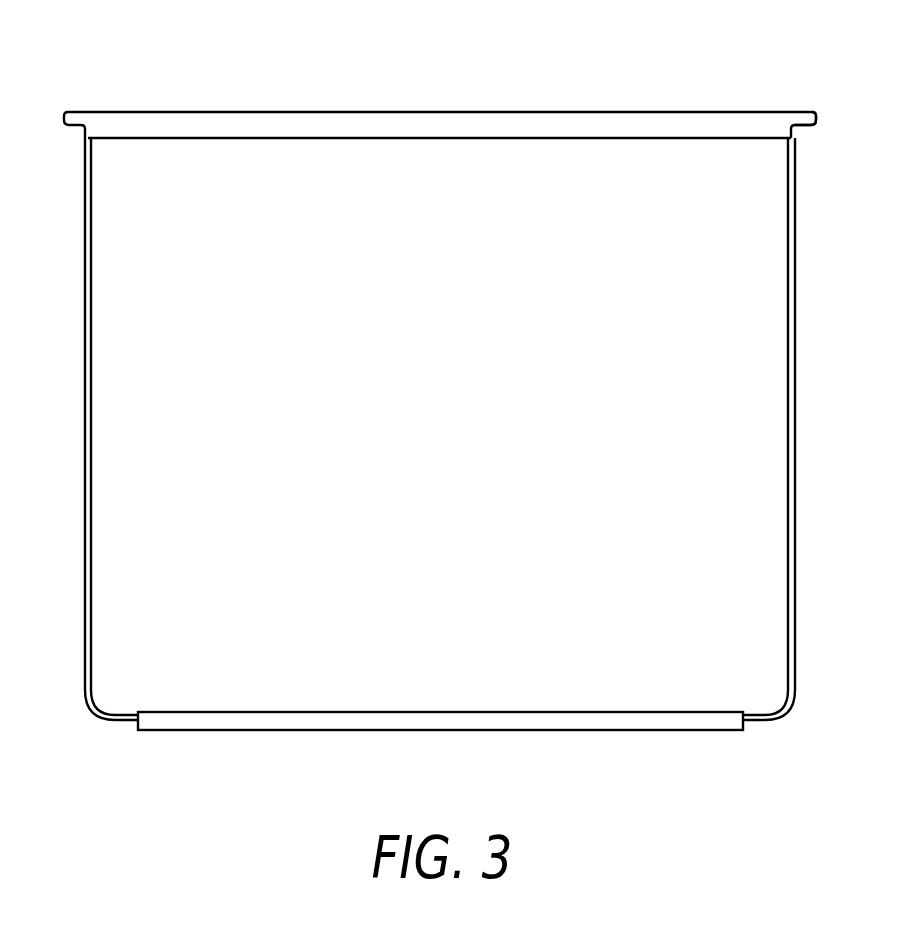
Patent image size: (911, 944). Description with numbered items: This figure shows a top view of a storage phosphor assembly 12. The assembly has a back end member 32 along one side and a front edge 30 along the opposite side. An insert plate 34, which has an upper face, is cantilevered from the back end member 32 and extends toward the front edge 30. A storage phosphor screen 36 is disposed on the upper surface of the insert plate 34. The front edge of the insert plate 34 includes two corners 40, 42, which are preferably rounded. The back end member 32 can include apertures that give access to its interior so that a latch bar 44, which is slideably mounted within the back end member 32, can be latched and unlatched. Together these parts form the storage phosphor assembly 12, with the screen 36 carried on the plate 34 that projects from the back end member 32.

The storage phosphor assembly 12 is at (459, 472).
The front edge 30 is at (336, 732).
The back end member 32 is at (341, 111).
The insert plate 34 is at (110, 499).
The storage phosphor screen 36 is at (740, 440).
The corner 40 is at (95, 716).
The corner 42 is at (792, 708).
The latch bar 44 is at (737, 111).